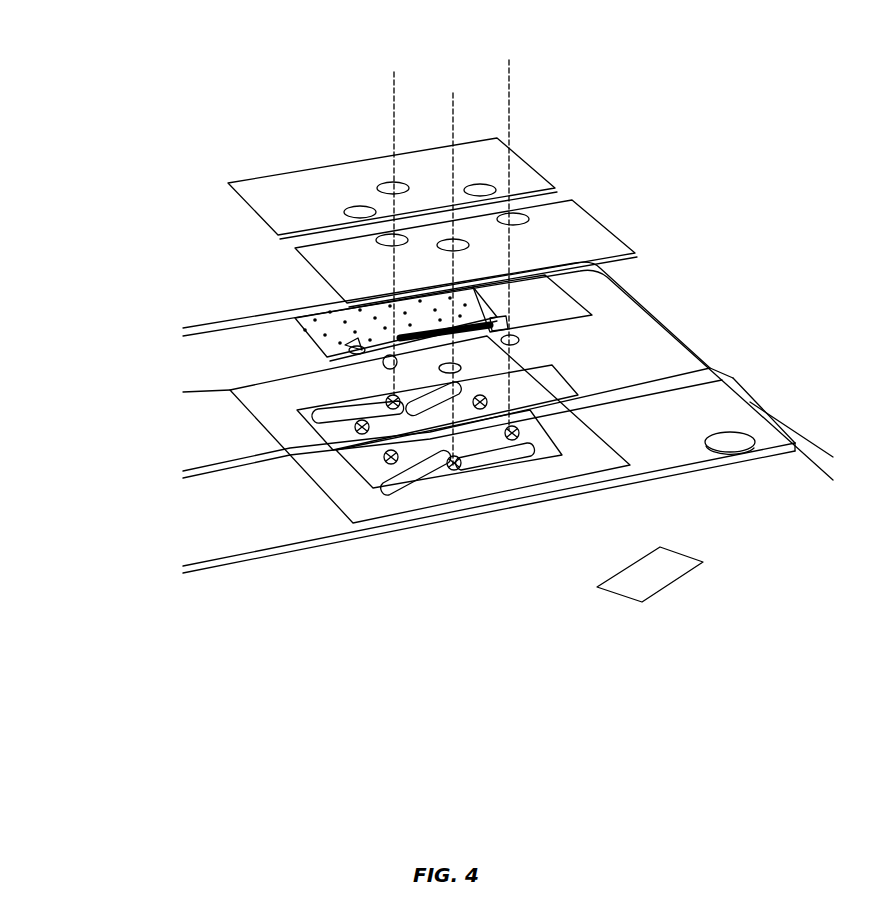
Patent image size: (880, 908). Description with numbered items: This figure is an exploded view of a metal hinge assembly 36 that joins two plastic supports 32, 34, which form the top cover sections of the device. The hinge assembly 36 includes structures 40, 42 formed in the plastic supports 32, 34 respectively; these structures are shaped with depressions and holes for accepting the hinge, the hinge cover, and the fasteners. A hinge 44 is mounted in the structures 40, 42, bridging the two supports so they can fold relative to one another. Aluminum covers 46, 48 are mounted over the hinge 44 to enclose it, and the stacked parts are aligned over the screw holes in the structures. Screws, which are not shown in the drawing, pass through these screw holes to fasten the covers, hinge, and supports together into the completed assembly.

The hinge assembly 36 is at (634, 83).
The plastic support 32 is at (217, 408).
The plastic support 34 is at (243, 530).
The structure 40 is at (327, 423).
The structure 42 is at (373, 473).
The hinge 44 is at (310, 335).
The aluminum cover 46 is at (283, 207).
The aluminum cover 48 is at (323, 270).